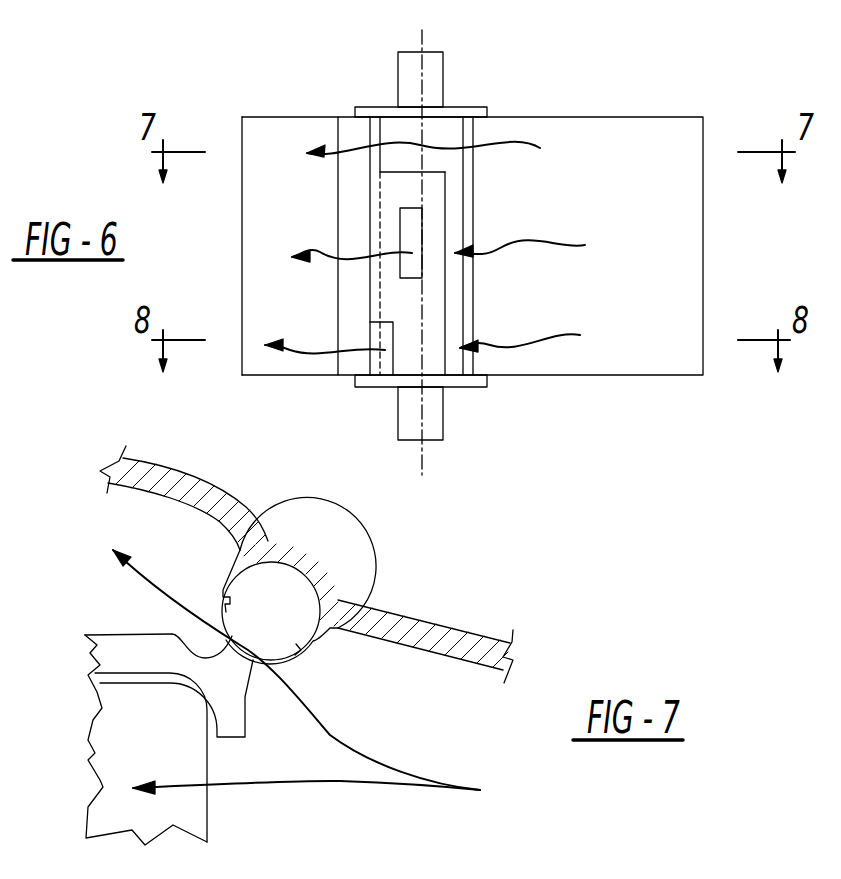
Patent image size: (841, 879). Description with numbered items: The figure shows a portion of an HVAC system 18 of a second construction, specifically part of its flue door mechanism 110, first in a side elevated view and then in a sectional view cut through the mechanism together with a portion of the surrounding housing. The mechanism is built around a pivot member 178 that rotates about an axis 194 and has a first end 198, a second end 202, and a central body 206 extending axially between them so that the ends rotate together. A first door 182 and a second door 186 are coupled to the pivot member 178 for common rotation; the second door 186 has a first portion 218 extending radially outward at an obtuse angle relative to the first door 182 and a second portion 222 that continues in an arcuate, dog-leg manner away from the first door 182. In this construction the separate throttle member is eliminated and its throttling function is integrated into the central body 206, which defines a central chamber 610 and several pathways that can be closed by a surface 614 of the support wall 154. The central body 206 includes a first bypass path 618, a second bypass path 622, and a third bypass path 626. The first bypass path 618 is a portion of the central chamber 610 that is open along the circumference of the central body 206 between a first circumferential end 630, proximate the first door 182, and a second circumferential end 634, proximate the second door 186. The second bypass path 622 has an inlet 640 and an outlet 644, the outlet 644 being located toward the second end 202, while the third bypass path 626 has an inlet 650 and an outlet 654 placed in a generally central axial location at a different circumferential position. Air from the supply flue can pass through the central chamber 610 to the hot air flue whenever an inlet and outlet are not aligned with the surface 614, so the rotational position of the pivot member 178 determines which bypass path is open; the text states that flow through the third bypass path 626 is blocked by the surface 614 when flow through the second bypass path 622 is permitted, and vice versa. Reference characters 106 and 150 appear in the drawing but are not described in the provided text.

In FIG. 6, the HVAC system 18 is at (203, 97).
In FIG. 6, the flue door mechanism 110 is at (252, 115).
In FIG. 7, the flue door mechanism 110 is at (455, 665).
In FIG. 6, the first door 182 is at (657, 138).
In FIG. 7, the first door 182 is at (452, 638).
In FIG. 6, the second door 186 is at (242, 175).
In FIG. 7, the second door 186 is at (137, 480).
In FIG. 6, the axis 194 is at (422, 40).
In FIG. 6, the first end 198 is at (432, 72).
In FIG. 6, the second end 202 is at (432, 440).
In FIG. 6, the central body 206 is at (470, 296).
In FIG. 6, the first portion 218 is at (345, 362).
In FIG. 6, the second portion 222 is at (267, 365).
In FIG. 6, the pivot member 178 is at (463, 393).
In FIG. 6, the central chamber 610 is at (437, 135).
In FIG. 7, the central chamber 610 is at (290, 587).
In FIG. 6, the first bypass path 618 is at (405, 128).
In FIG. 7, the first bypass path 618 is at (268, 600).
In FIG. 6, the second bypass path 622 is at (387, 365).
In FIG. 6, the third bypass path 626 is at (408, 222).
In FIG. 6, the first circumferential end 630 is at (470, 128).
In FIG. 7, the first circumferential end 630 is at (290, 658).
In FIG. 6, the second circumferential end 634 is at (377, 128).
In FIG. 7, the second circumferential end 634 is at (222, 606).
In FIG. 6, the inlet 640 is at (470, 383).
In FIG. 6, the outlet 644 is at (393, 333).
In FIG. 6, the inlet 650 is at (425, 237).
In FIG. 6, the outlet 654 is at (400, 268).
In FIG. 7, the support wall 154 is at (120, 658).
In FIG. 7, the surface 614 is at (198, 657).
In FIG. 7, the bracket body 106 is at (125, 747).
In FIG. 7, the cable 150 is at (428, 780).